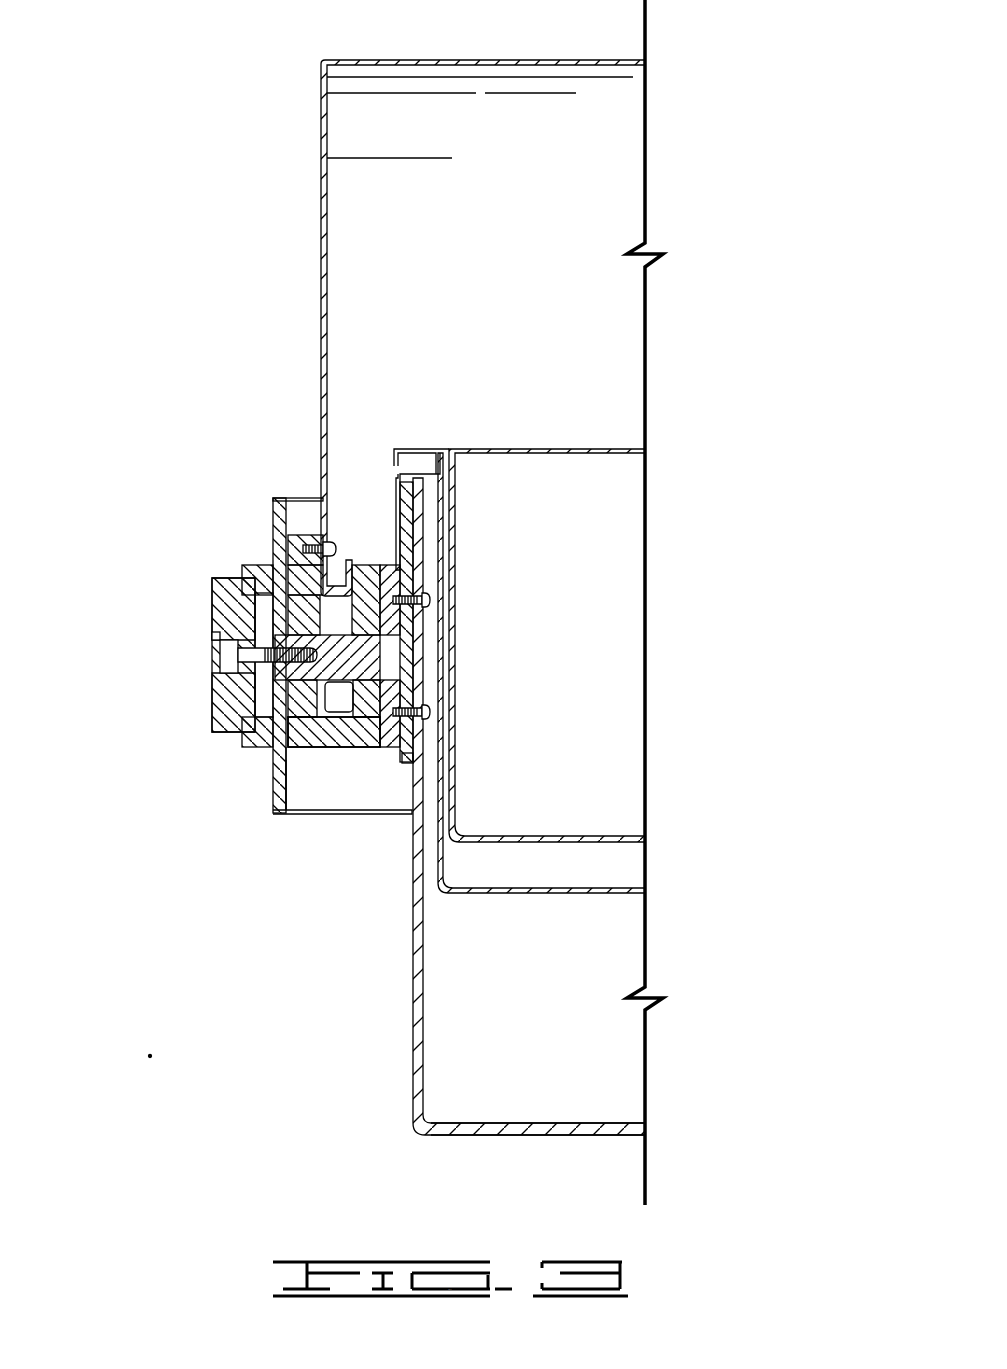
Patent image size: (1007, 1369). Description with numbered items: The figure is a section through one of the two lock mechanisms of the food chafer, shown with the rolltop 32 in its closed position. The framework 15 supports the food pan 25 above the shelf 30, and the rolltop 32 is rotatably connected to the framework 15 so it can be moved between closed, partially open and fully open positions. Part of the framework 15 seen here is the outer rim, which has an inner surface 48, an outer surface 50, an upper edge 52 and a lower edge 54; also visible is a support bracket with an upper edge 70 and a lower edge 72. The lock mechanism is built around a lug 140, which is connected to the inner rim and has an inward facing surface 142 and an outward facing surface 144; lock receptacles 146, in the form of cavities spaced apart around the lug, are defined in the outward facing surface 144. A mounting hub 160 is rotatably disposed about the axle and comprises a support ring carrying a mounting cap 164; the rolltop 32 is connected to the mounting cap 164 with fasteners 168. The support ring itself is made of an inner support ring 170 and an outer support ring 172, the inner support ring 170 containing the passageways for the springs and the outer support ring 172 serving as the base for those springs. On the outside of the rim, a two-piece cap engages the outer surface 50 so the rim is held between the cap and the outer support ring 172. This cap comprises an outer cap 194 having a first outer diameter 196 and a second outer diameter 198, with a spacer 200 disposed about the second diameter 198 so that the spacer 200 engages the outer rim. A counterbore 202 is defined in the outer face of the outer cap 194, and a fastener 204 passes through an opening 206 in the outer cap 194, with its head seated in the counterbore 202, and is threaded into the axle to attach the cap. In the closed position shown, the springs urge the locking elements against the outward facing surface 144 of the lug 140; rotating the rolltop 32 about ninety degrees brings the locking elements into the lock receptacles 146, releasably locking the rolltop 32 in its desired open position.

The framework 15 is at (413, 1030).
The food pan 25 is at (452, 484).
The shelf 30 is at (505, 1136).
The rolltop 32 is at (319, 135).
The inner surface 48 is at (308, 787).
The outer surface 50 is at (272, 795).
The upper edge 52 is at (300, 497).
The lower edge 54 is at (288, 783).
The upper edge 70 is at (405, 482).
The lower edge 72 is at (413, 770).
The lug 140 is at (430, 601).
The inward facing surface 142 is at (385, 661).
The outward facing surface 144 is at (381, 692).
The lock receptacles 146 is at (381, 586).
The mounting hub 160 is at (352, 748).
The mounting cap 164 is at (297, 540).
The fasteners 168 is at (334, 548).
The inner support ring 170 is at (334, 732).
The outer support ring 172 is at (282, 756).
The outer cap 194 is at (213, 598).
The first outer diameter 196 is at (222, 600).
The second outer diameter 198 is at (247, 736).
The spacer 200 is at (253, 566).
The counterbore 202 is at (217, 638).
The fastener 204 is at (215, 680).
The opening 206 is at (226, 656).